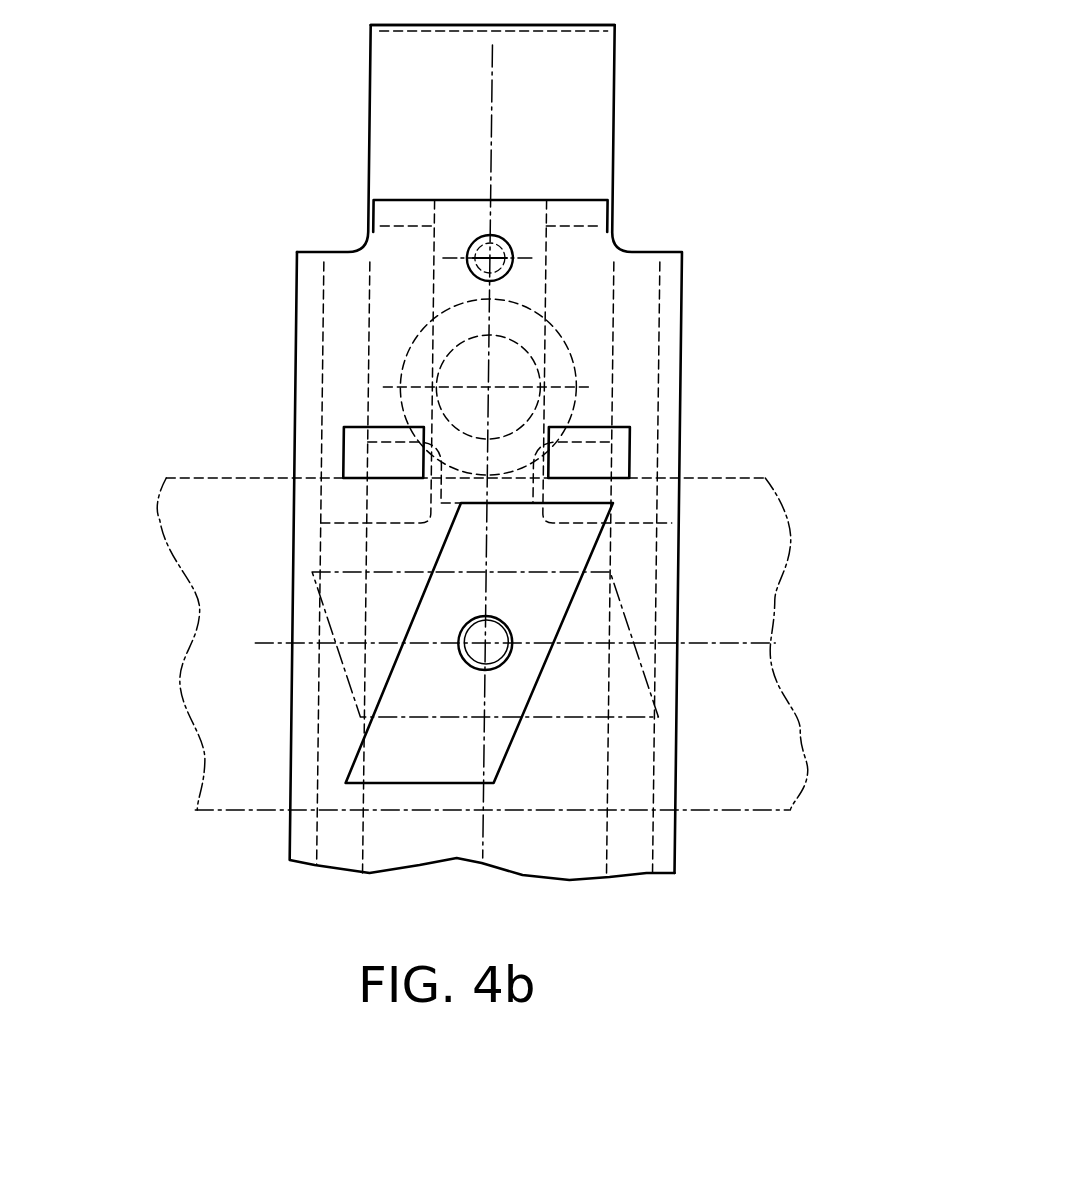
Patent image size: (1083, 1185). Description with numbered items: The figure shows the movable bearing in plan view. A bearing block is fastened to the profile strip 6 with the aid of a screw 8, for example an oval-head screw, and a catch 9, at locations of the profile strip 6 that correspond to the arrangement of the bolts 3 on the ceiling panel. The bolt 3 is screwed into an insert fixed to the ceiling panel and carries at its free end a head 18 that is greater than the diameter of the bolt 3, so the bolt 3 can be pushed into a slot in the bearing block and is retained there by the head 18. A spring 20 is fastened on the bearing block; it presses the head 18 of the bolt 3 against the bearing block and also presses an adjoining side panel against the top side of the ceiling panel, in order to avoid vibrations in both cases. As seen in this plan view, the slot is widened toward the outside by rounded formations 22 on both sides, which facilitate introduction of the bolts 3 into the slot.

The spring 20 is at (562, 145).
The bolt 3 is at (490, 387).
The head 18 is at (561, 375).
The rounded formations 22 is at (426, 516).
The screw 8 is at (482, 635).
The catch 9 is at (384, 765).
The profile strip 6 is at (737, 749).